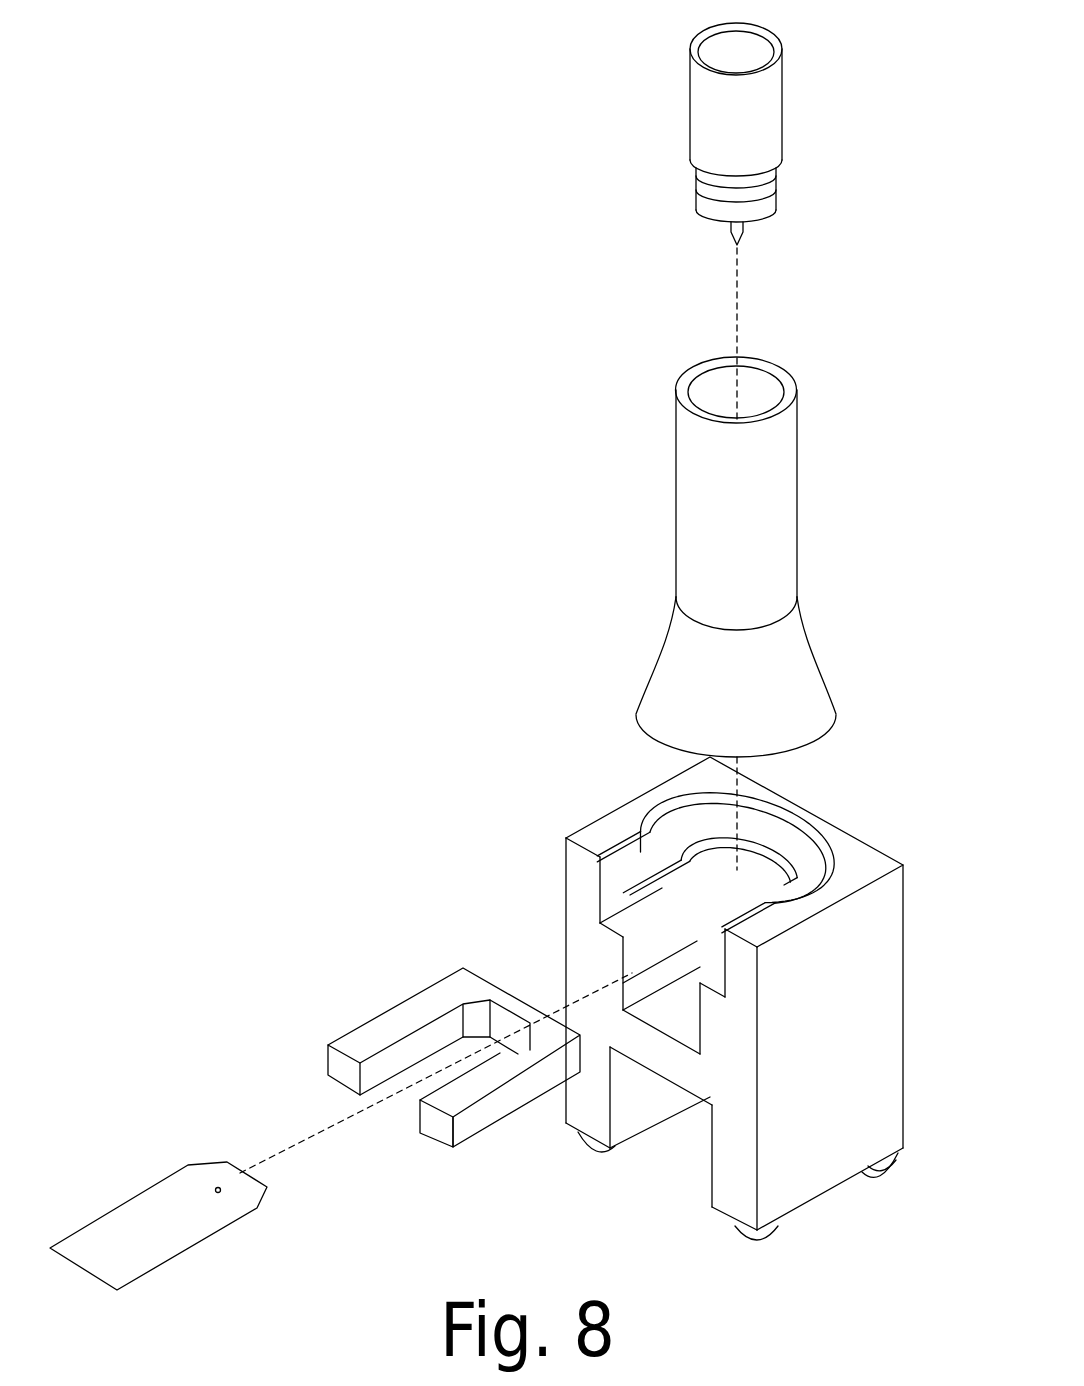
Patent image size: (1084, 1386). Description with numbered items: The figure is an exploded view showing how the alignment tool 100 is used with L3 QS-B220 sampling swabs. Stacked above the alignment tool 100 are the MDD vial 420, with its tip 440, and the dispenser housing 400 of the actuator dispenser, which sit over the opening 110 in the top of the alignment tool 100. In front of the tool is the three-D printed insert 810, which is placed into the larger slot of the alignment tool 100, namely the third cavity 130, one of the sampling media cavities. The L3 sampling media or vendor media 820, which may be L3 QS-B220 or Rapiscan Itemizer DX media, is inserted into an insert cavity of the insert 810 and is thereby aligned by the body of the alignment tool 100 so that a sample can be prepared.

The alignment tool 100 is at (647, 1040).
The vial receiving opening 110 is at (723, 818).
The third cavity 130 is at (768, 865).
The dispenser housing 400 is at (813, 605).
The MDD vial 420 is at (770, 107).
The nozzle tip 440 is at (747, 235).
The insert 810 is at (463, 1133).
The sampling media 820 is at (128, 1268).